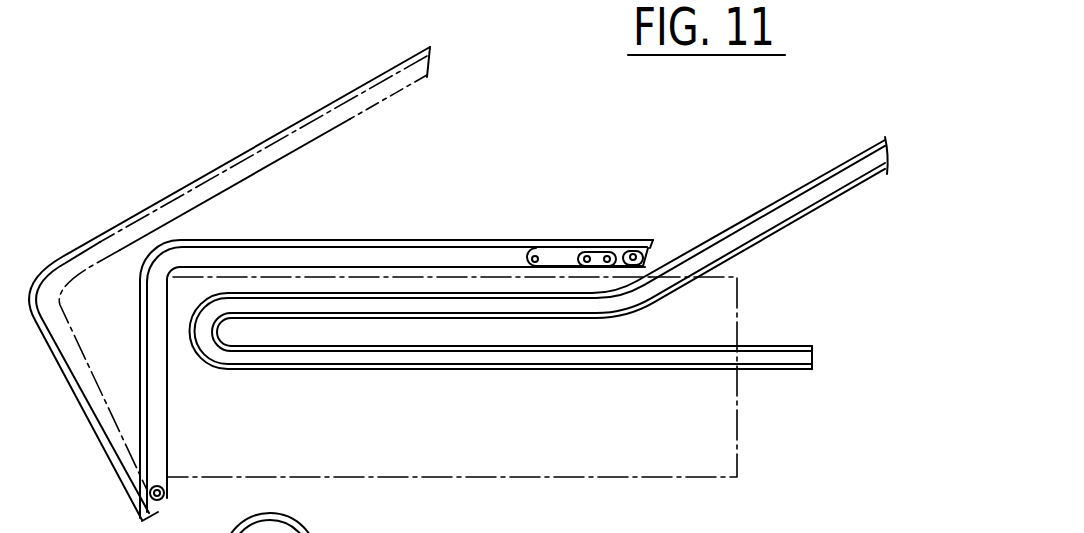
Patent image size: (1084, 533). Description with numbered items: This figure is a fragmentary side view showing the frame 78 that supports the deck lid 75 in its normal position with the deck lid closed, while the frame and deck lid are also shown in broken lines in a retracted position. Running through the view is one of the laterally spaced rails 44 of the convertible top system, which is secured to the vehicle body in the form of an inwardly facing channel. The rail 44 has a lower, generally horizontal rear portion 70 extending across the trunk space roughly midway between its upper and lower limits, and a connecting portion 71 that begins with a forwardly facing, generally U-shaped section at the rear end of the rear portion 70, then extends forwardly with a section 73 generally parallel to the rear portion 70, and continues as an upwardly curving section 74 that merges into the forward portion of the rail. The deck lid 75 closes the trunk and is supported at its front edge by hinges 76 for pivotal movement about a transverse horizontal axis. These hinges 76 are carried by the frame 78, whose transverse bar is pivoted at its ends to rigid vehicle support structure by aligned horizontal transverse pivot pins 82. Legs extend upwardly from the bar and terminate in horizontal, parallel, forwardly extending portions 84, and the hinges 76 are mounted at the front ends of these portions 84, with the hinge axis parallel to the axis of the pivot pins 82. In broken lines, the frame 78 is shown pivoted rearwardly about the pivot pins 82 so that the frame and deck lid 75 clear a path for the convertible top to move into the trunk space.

The rail 44 is at (741, 204).
The rear portion 70 is at (437, 364).
The connecting portion 71 is at (785, 203).
The section 73 is at (347, 311).
The upwardly curving section 74 is at (807, 213).
The deck lid 75 is at (278, 141).
The hinges 76 is at (563, 257).
The frame 78 is at (180, 412).
The pivot pins 82 is at (165, 494).
The forwardly extending portions 84 is at (387, 253).